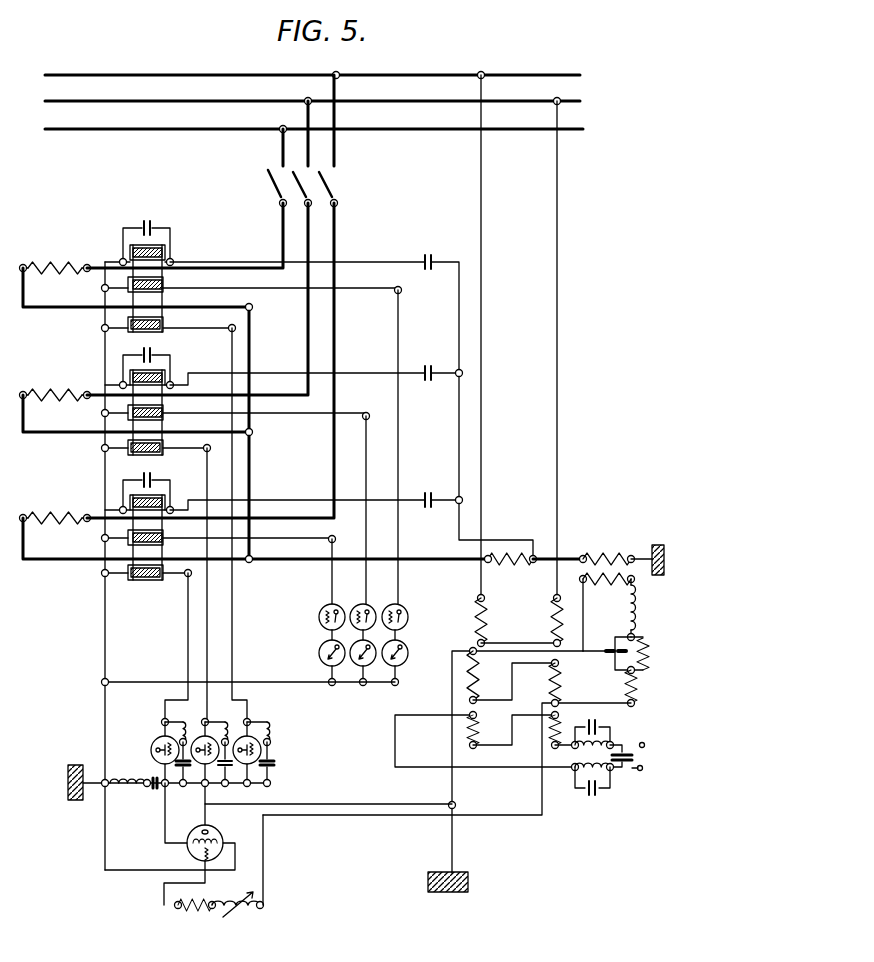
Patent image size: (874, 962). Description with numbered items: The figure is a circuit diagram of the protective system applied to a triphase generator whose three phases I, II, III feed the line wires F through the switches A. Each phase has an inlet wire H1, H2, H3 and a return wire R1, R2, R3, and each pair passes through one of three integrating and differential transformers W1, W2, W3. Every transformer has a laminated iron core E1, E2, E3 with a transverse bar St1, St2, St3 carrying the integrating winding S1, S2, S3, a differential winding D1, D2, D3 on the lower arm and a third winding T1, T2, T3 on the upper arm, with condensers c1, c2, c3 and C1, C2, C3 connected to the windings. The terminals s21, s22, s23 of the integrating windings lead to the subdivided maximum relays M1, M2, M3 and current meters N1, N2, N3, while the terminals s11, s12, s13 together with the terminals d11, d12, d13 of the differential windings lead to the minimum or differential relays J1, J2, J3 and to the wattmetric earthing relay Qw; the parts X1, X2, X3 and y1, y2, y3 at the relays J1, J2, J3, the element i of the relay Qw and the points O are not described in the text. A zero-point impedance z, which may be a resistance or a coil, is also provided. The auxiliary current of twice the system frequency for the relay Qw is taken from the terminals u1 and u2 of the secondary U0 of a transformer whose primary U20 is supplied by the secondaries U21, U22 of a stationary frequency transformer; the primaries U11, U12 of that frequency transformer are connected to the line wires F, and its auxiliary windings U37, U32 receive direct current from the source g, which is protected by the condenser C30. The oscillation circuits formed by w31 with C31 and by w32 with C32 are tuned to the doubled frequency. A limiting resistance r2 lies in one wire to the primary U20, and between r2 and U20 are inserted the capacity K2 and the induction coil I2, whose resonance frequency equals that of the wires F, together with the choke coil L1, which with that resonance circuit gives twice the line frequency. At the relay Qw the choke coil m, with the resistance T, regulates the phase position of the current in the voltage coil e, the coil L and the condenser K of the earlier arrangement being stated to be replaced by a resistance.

The line wires F is at (308, 102).
The switches A is at (313, 141).
The first phase of triphase generator I is at (55, 256).
The second phase of triphase generator II is at (55, 382).
The third phase of triphase generator III is at (55, 506).
The inlet wire H1 is at (262, 262).
The inlet wire H2 is at (285, 392).
The inlet wire H3 is at (299, 517).
The return wire R1 is at (252, 306).
The return wire R2 is at (252, 431).
The return wire R3 is at (251, 562).
The condenser c1 is at (150, 222).
The condenser c2 is at (141, 363).
The condenser c3 is at (146, 487).
The condenser C1 is at (432, 254).
The condenser C2 is at (432, 365).
The condenser C3 is at (432, 492).
The third winding T1 is at (165, 250).
The third winding T2 is at (165, 375).
The third winding T3 is at (165, 500).
The laminated iron core E1 is at (150, 337).
The laminated iron core E2 is at (140, 456).
The laminated iron core E3 is at (140, 581).
The integrating and differential transformer W1 is at (297, 253).
The integrating and differential transformer W2 is at (297, 370).
The integrating and differential transformer W3 is at (297, 495).
The integrating winding S1 is at (165, 283).
The integrating winding S2 is at (165, 409).
The integrating winding S3 is at (165, 535).
The transverse bar St1 is at (160, 290).
The transverse bar St2 is at (160, 417).
The transverse bar St3 is at (160, 542).
The differential winding D1 is at (165, 334).
The differential winding D2 is at (165, 457).
The differential winding D3 is at (165, 582).
The terminal of integrating winding s11 is at (101, 291).
The terminal of integrating winding s12 is at (101, 416).
The terminal of integrating winding s13 is at (101, 541).
The terminal of integrating winding s21 is at (402, 291).
The terminal of integrating winding s22 is at (369, 413).
The terminal of integrating winding s23 is at (335, 536).
The terminal of differential winding d11 is at (101, 330).
The terminal of differential winding d12 is at (101, 450).
The terminal of differential winding d13 is at (101, 575).
The maximum relay M1 is at (401, 605).
The maximum relay M2 is at (369, 605).
The maximum relay M3 is at (338, 605).
The current meter N1 is at (385, 665).
The current meter N2 is at (353, 665).
The current meter N3 is at (322, 665).
The zero-point impedance z is at (511, 571).
The terminal u1 is at (583, 555).
The secondary of transformer U0 is at (618, 543).
The terminal u2 is at (636, 556).
The earth connection O is at (660, 578).
The primary of transformer U20 is at (612, 583).
The choke coil L1 is at (637, 612).
The capacity K2 is at (606, 655).
The induction coil I2 is at (648, 654).
The limiting resistance r2 is at (637, 686).
The primary of frequency transformer U11 is at (486, 624).
The primary of frequency transformer U12 is at (552, 624).
The secondary of frequency transformer U21 is at (479, 676).
The secondary of frequency transformer U22 is at (561, 684).
The auxiliary winding U37 is at (479, 731).
The auxiliary winding U32 is at (560, 736).
The condenser C32 is at (600, 722).
The oscillation circuit winding w31 is at (600, 748).
The source of direct current g is at (635, 762).
The oscillation circuit winding w32 is at (572, 770).
The protective condenser C30 is at (637, 771).
The condenser C31 is at (597, 795).
The relay coil X1 is at (258, 724).
The relay coil X2 is at (215, 724).
The relay coil X3 is at (174, 724).
The minimum or differential relay J1 is at (261, 750).
The minimum or differential relay J2 is at (203, 764).
The minimum or differential relay J3 is at (151, 750).
The contact y1 is at (275, 763).
The contact y2 is at (220, 765).
The contact y3 is at (178, 765).
The coil L is at (122, 780).
The condenser K is at (153, 790).
The wattmetric earth relay Qw is at (218, 832).
The voltage coil e is at (195, 825).
The winding i is at (193, 849).
The resistance T is at (195, 915).
The choke coil m is at (238, 873).